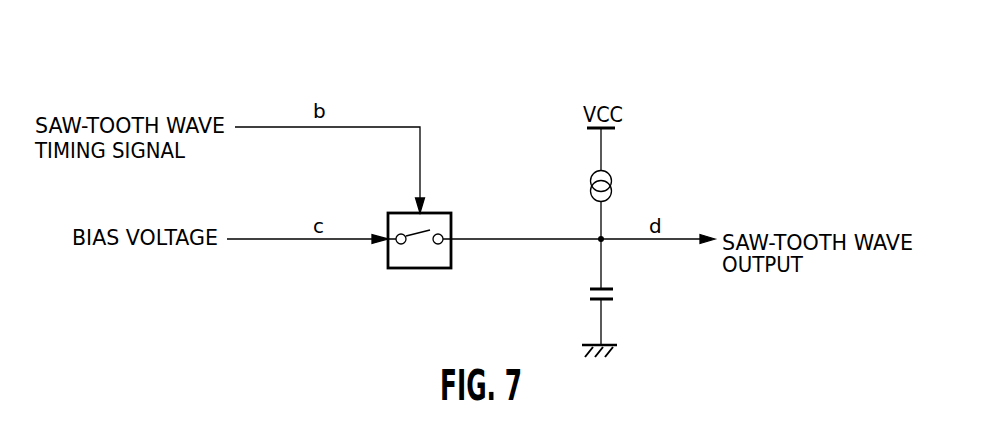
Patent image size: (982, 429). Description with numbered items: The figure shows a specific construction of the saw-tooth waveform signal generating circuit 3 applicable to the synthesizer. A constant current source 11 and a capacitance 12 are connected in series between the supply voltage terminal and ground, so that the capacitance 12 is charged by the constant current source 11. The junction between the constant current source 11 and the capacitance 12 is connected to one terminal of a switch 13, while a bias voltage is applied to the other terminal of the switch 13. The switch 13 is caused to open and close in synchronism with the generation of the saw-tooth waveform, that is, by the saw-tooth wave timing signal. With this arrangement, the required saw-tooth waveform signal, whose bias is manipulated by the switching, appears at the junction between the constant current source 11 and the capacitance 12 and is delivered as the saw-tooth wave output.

The saw-tooth waveform signal generating circuit 3 is at (449, 104).
The constant current source 11 is at (611, 176).
The capacitance 12 is at (614, 296).
The switch 13 is at (448, 223).